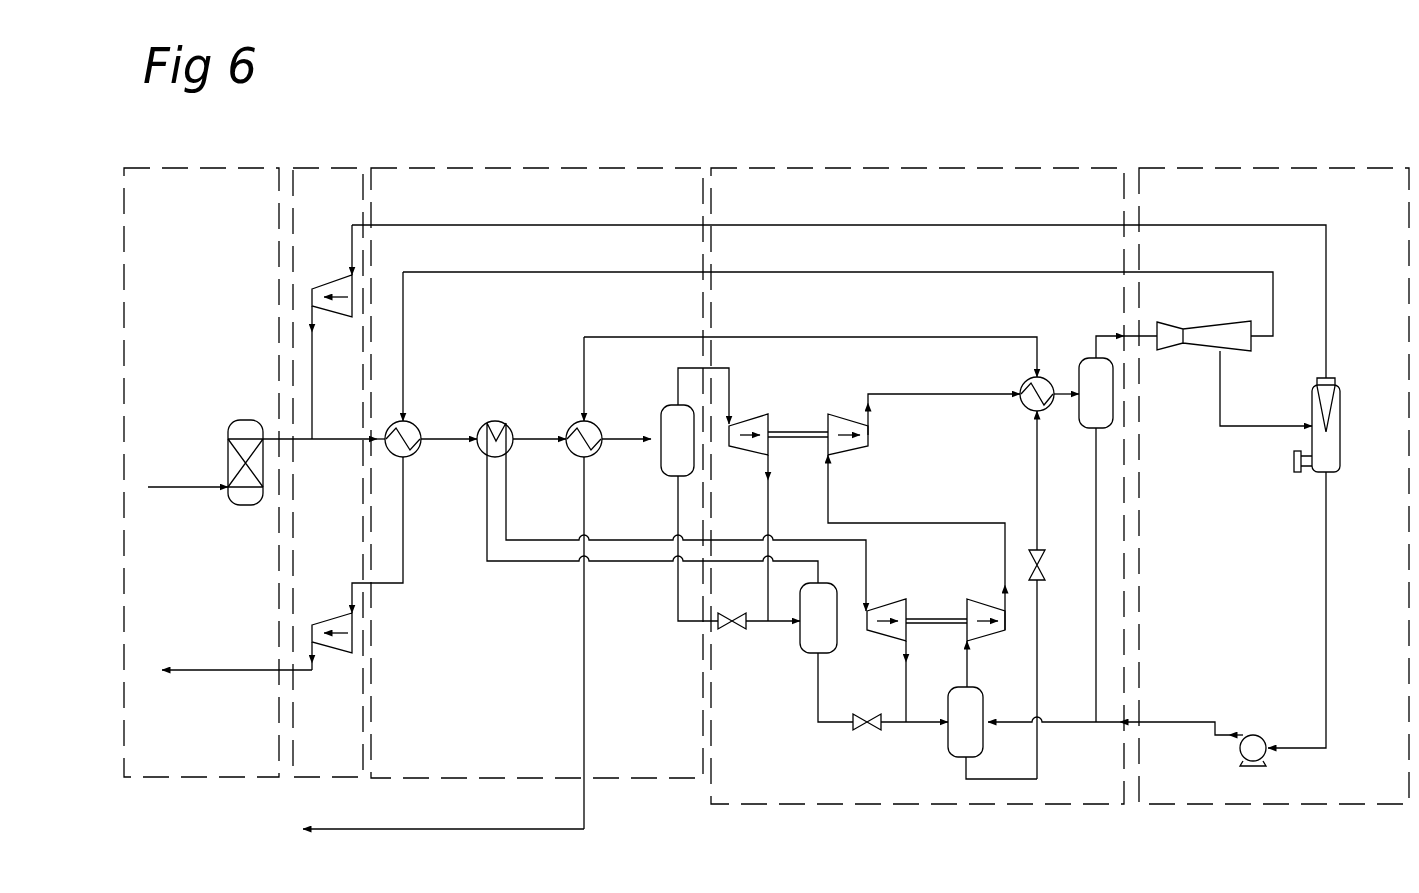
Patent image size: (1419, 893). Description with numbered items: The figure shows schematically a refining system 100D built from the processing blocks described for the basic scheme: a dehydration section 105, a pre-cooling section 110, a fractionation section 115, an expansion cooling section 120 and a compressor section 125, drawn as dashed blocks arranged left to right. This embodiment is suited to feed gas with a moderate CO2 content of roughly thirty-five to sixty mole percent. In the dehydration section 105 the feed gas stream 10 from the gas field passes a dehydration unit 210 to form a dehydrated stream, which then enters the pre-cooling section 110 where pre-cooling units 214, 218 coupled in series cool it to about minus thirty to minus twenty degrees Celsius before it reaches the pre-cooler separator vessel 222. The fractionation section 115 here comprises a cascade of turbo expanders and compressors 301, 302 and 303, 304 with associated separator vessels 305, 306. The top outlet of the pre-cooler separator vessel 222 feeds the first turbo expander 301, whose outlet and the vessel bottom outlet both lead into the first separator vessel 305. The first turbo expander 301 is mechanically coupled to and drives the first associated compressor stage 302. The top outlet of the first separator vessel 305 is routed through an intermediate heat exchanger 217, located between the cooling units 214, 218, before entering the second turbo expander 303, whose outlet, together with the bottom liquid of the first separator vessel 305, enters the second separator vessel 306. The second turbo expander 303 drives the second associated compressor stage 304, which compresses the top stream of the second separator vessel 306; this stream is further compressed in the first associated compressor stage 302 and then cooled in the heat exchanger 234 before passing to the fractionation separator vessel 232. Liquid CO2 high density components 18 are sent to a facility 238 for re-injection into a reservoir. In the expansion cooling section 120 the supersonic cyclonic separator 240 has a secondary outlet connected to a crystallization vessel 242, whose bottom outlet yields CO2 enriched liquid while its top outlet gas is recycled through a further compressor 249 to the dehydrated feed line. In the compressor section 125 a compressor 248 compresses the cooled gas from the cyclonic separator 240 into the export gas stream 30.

The refining system 100D is at (808, 133).
The dehydration section 105 is at (228, 167).
The compressor section 125 is at (316, 167).
The pre-cooling section 110 is at (525, 167).
The fractionation section 115 is at (946, 167).
The expansion cooling section 120 is at (1195, 167).
The feed gas stream 10 is at (163, 485).
The dehydration unit 210 is at (245, 495).
The further compressor 249 is at (345, 280).
The pre-cooling unit 214 is at (412, 425).
The intermediate heat exchanger 217 is at (503, 425).
The pre-cooling unit 218 is at (594, 422).
The pre-cooler separator vessel 222 is at (670, 468).
The first turbo expander 301 is at (750, 445).
The first associated compressor stage 302 is at (843, 420).
The fractionation separator vessel 232 is at (1092, 368).
The heat exchanger 234 is at (1024, 405).
The second associated compressor stage 304 is at (990, 610).
The second turbo expander 303 is at (885, 627).
The first separator vessel 305 is at (808, 645).
The second separator vessel 306 is at (955, 740).
The supersonic cyclonic separator 240 is at (1207, 340).
The crystallization vessel 242 is at (1332, 418).
The export gas stream 30 is at (212, 668).
The compressor 248 is at (345, 652).
The high density components 18 is at (443, 855).
The facility 238 is at (387, 830).